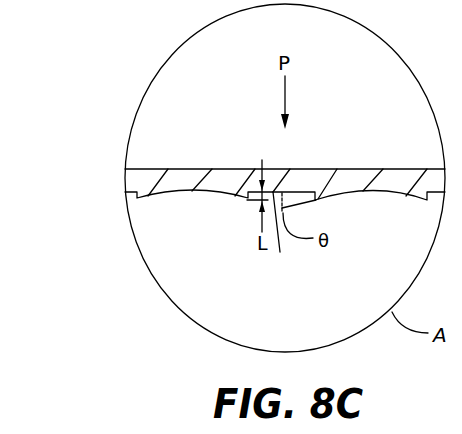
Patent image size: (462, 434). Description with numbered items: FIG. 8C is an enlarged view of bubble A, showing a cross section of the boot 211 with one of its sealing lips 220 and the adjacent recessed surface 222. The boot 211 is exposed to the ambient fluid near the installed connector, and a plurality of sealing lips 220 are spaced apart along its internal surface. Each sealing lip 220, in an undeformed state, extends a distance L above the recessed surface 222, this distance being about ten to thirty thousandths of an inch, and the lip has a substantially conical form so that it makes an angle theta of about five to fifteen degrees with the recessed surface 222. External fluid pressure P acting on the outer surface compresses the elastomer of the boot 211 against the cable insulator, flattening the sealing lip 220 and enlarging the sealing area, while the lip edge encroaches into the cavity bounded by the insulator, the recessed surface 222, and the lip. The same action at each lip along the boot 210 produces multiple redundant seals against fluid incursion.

The boot 210 is at (285, 203).
The boot 211 is at (203, 167).
The sealing lip 220 is at (315, 200).
The recessed surface 222 is at (282, 234).